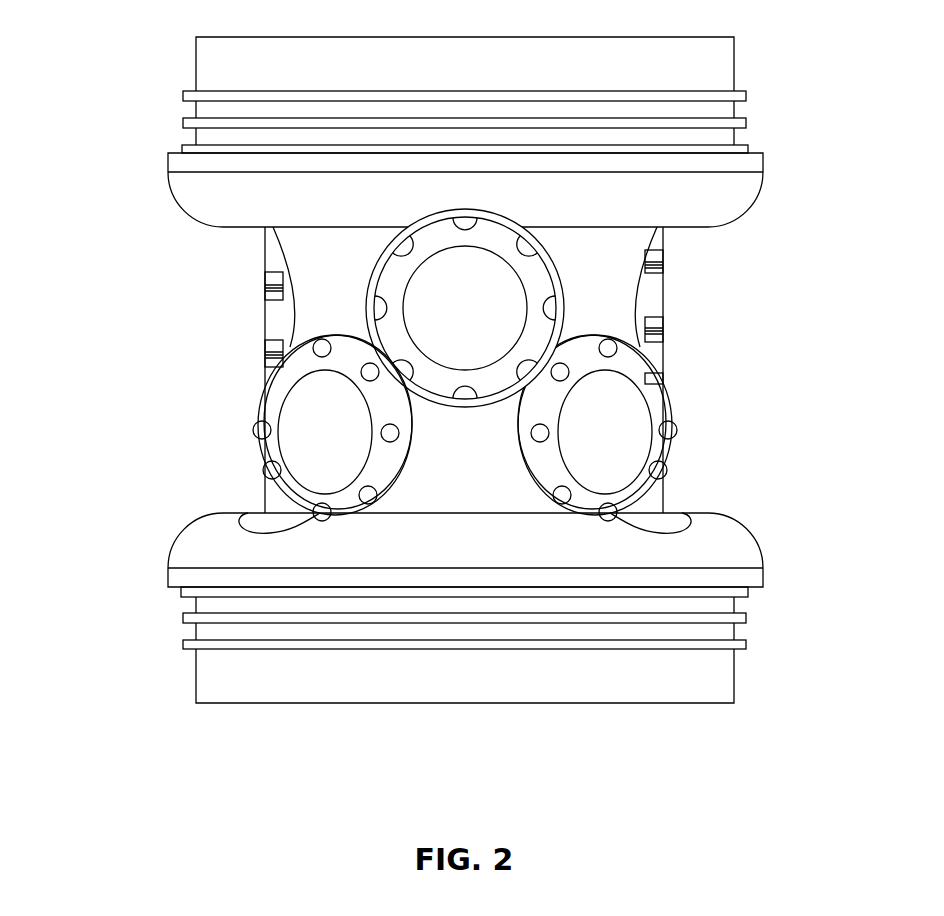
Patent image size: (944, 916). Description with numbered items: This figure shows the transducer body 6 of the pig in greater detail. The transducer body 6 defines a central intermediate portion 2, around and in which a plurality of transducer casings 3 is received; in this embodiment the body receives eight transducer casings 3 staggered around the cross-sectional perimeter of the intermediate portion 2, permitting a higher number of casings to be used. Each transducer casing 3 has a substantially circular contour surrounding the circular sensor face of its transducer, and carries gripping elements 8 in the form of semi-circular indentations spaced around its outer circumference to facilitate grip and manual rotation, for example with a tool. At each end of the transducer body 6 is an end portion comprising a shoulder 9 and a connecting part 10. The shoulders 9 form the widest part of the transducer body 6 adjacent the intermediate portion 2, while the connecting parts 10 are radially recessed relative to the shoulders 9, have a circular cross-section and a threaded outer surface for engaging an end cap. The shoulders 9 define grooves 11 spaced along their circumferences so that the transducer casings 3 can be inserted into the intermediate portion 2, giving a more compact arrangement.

The intermediate portion 2 is at (447, 370).
The transducer casing 3 is at (540, 281).
The transducer body 6 is at (308, 253).
The gripping element 8 is at (248, 432).
The shoulder 9 is at (787, 181).
The connecting part 10 is at (764, 65).
The groove 11 is at (221, 526).